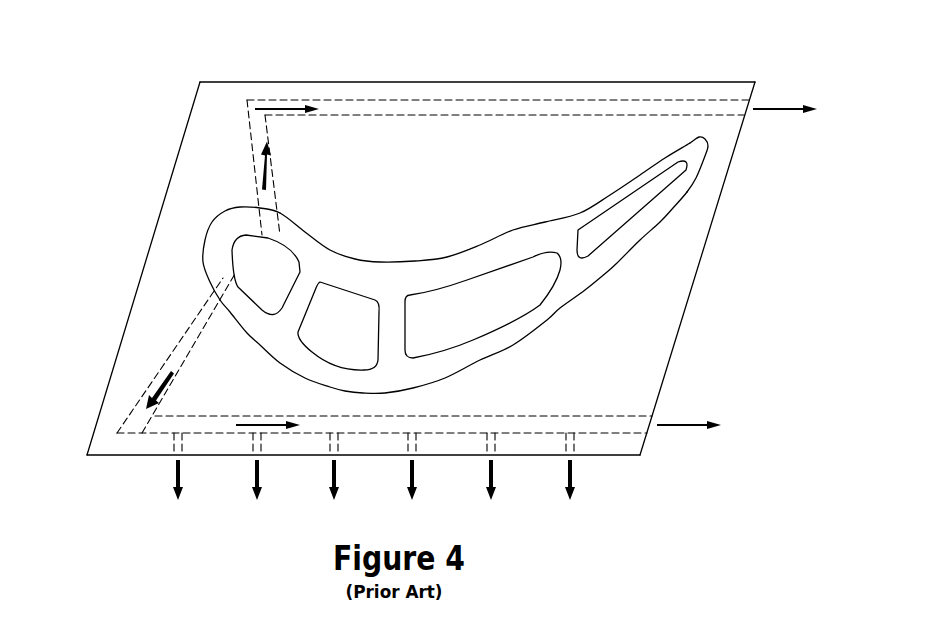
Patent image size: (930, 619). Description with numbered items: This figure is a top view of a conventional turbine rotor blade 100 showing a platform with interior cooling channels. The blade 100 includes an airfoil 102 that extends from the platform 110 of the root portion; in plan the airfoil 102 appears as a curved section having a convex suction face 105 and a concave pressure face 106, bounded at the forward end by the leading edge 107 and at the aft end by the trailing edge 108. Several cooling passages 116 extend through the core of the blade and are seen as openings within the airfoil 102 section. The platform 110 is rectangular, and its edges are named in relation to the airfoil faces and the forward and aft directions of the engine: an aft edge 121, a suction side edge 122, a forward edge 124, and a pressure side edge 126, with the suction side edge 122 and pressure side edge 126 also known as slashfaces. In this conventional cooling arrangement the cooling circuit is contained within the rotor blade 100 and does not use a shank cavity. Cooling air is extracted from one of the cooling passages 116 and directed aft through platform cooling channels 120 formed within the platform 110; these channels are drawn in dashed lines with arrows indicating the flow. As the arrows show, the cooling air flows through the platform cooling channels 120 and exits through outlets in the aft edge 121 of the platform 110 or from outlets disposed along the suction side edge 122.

The turbine rotor blade 100 is at (411, 277).
The airfoil 102 is at (441, 267).
The suction face 105 is at (450, 375).
The pressure face 106 is at (462, 248).
The leading edge 107 is at (210, 222).
The trailing edge 108 is at (708, 142).
The platform 110 is at (137, 321).
The cooling passages 116 is at (246, 281).
The platform cooling channels 120 is at (368, 99).
The aft edge 121 is at (687, 307).
The suction side edge 122 is at (125, 456).
The forward edge 124 is at (137, 288).
The pressure side edge 126 is at (664, 82).